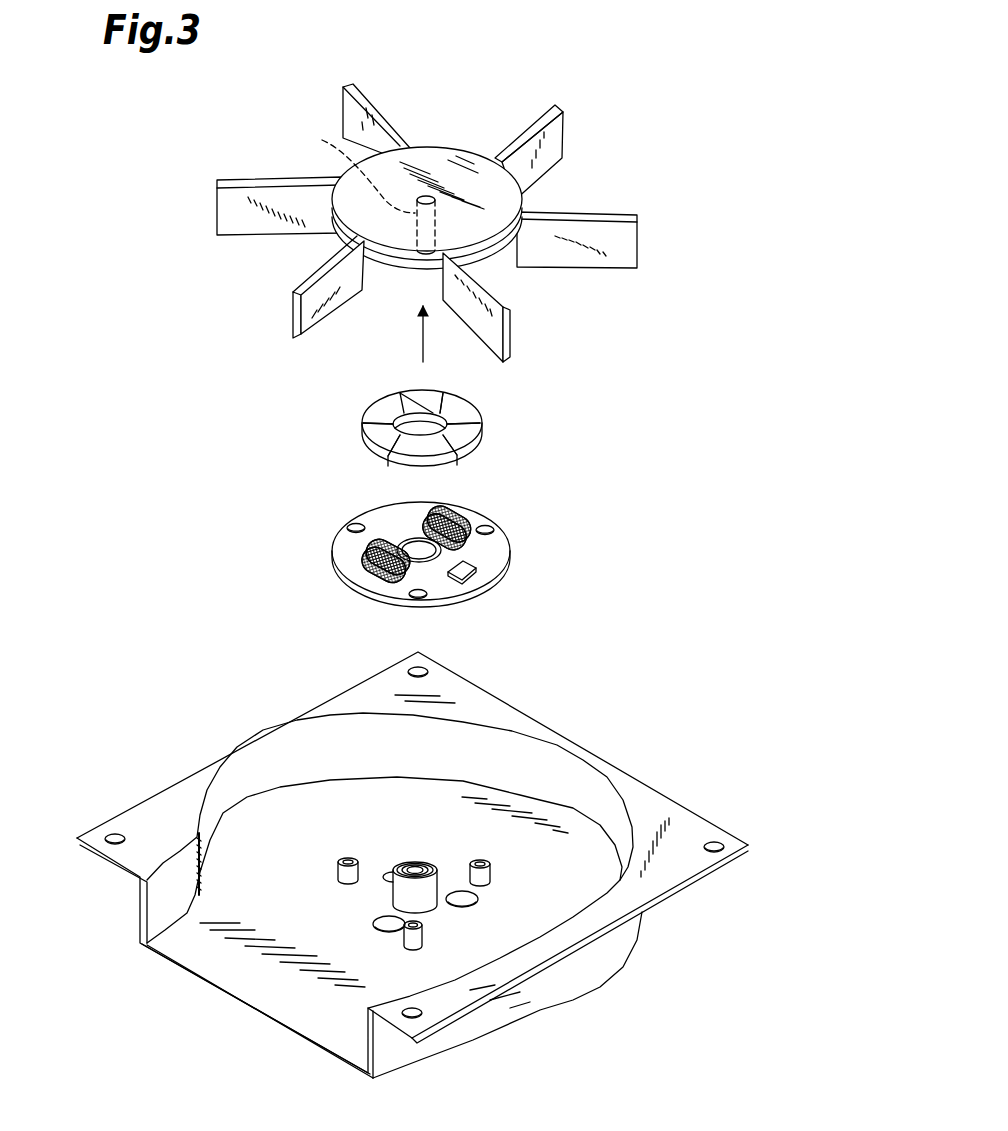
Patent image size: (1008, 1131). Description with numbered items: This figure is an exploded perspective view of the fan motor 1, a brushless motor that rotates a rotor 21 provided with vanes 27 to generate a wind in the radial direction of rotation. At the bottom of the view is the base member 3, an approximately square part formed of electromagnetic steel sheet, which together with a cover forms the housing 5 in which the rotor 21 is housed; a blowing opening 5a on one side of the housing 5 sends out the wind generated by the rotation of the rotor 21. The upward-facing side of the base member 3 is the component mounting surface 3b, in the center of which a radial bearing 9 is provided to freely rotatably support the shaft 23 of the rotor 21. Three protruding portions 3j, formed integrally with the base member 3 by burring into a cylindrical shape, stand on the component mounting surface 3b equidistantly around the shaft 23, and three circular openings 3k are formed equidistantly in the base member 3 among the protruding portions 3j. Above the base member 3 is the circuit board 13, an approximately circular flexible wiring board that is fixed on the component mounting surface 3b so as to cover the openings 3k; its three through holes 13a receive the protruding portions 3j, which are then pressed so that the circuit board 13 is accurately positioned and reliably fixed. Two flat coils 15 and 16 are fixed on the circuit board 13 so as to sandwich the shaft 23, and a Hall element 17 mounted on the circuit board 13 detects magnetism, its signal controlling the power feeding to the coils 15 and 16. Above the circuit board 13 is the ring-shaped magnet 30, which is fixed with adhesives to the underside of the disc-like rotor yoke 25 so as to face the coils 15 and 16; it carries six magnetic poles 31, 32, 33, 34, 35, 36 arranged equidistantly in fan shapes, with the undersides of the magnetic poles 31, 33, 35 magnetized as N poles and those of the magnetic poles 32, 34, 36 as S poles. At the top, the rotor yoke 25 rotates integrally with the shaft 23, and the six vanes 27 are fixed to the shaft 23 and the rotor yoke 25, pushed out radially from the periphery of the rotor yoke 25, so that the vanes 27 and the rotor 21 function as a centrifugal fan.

The fan motor 1 is at (652, 123).
The rotor 21 is at (447, 204).
The shaft 23 is at (352, 165).
The rotor yoke 25 is at (498, 257).
The vanes 27 is at (372, 110).
The magnet 30 is at (352, 421).
The magnetic pole 31 is at (470, 410).
The magnetic pole 32 is at (467, 437).
The magnetic pole 33 is at (427, 455).
The magnetic pole 34 is at (377, 435).
The magnetic pole 35 is at (380, 404).
The magnetic pole 36 is at (427, 393).
The circuit board 13 is at (492, 562).
The through holes 13a is at (350, 525).
The coil 15 is at (455, 517).
The coil 16 is at (370, 558).
The Hall element 17 is at (470, 577).
The base member 3 is at (638, 790).
The housing 5 is at (412, 865).
The component mounting surface 3b is at (522, 803).
The radial bearing 9 is at (418, 862).
The circular openings 3k is at (383, 869).
The protruding portions 3j is at (338, 868).
The blowing opening 5a is at (253, 993).